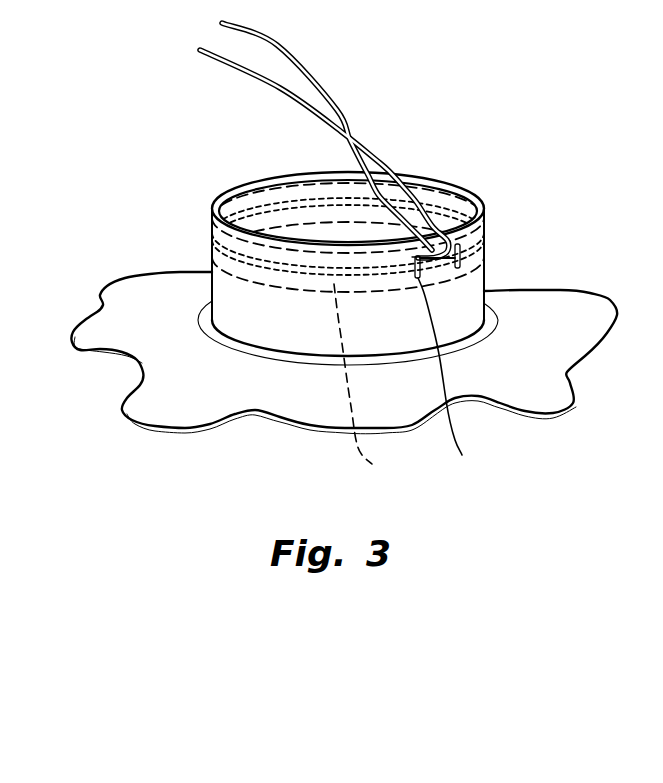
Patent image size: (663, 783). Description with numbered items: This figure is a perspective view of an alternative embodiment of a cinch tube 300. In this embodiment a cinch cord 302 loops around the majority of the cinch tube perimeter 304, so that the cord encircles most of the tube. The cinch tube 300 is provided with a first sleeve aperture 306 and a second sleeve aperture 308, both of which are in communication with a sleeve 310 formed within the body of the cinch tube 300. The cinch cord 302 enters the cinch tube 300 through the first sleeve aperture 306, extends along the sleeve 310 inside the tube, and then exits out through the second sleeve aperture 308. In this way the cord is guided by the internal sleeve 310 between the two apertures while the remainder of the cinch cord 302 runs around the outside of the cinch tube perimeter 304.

The cinch tube 300 is at (198, 162).
The cinch cord 302 is at (279, 90).
The cinch tube perimeter 304 is at (253, 325).
The first sleeve aperture 306 is at (462, 258).
The second sleeve aperture 308 is at (461, 380).
The sleeve 310 is at (376, 383).